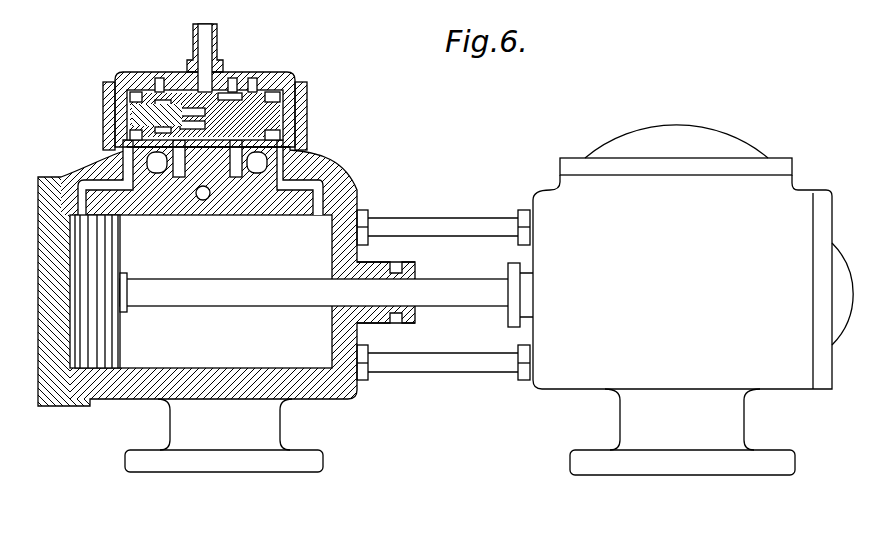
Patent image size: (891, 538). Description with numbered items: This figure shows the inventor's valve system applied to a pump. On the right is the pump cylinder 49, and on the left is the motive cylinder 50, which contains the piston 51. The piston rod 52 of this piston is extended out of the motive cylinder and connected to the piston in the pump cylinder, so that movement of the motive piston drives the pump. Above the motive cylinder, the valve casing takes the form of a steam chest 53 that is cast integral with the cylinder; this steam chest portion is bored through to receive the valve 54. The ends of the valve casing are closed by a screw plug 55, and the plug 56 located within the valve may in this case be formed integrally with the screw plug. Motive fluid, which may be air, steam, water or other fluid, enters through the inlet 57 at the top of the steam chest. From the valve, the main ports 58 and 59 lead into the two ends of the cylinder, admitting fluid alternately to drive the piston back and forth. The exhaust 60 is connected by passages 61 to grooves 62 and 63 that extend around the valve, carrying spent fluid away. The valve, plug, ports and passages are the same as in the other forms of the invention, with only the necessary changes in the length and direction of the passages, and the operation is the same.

The pump cylinder 49 is at (693, 300).
The motive cylinder 50 is at (226, 309).
The piston 51 is at (112, 336).
The piston rod 52 is at (326, 295).
The steam chest 53 is at (125, 72).
The valve 54 is at (268, 97).
The screw plug 55 is at (103, 94).
The plug 56 is at (132, 120).
The inlet 57 is at (220, 6).
The main port 58 is at (81, 205).
The main port 59 is at (355, 197).
The exhaust 60 is at (204, 200).
The passages 61 is at (178, 176).
The groove 62 is at (158, 78).
The groove 63 is at (251, 78).